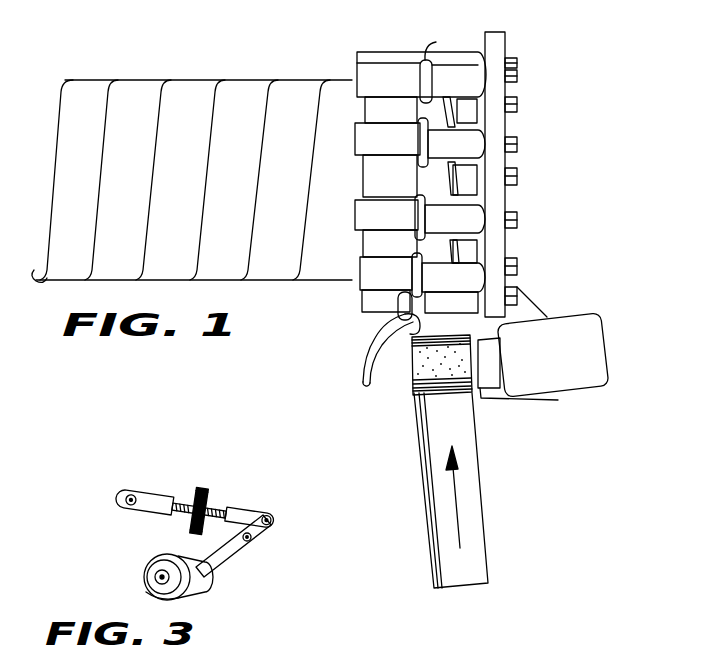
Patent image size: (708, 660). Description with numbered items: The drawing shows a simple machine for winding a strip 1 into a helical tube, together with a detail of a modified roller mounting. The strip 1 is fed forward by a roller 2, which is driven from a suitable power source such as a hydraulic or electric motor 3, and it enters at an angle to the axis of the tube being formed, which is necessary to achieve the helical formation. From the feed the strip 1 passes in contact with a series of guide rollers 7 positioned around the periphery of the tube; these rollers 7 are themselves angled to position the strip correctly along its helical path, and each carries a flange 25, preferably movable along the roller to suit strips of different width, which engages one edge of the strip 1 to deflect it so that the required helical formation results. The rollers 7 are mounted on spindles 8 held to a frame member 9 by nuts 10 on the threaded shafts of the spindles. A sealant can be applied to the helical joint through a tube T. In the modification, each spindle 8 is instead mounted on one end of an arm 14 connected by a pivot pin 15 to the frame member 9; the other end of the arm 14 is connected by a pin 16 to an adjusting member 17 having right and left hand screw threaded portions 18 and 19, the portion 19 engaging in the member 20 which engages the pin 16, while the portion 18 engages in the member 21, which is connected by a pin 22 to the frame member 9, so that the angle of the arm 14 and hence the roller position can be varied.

In FIG. 1, the strip 1 is at (238, 88).
In FIG. 1, the roller 2 is at (428, 368).
In FIG. 1, the motor 3 is at (549, 354).
In FIG. 1, the guide rollers 7 is at (378, 77).
In FIG. 3, the guide rollers 7 is at (170, 568).
In FIG. 3, the spindles 8 is at (158, 577).
In FIG. 1, the frame member 9 is at (496, 45).
In FIG. 1, the nuts 10 is at (517, 63).
In FIG. 3, the arm 14 is at (217, 558).
In FIG. 3, the pivot pin 15 is at (255, 537).
In FIG. 3, the pin 16 is at (274, 502).
In FIG. 3, the adjusting member 17 is at (208, 487).
In FIG. 3, the screw threaded portion 18 is at (189, 493).
In FIG. 3, the screw threaded portion 19 is at (222, 500).
In FIG. 3, the member 20 is at (249, 503).
In FIG. 3, the member 21 is at (151, 490).
In FIG. 3, the pin 22 is at (119, 513).
In FIG. 1, the flange 25 is at (434, 50).
In FIG. 3, the flange 25 is at (193, 598).
In FIG. 1, the tube T is at (366, 362).